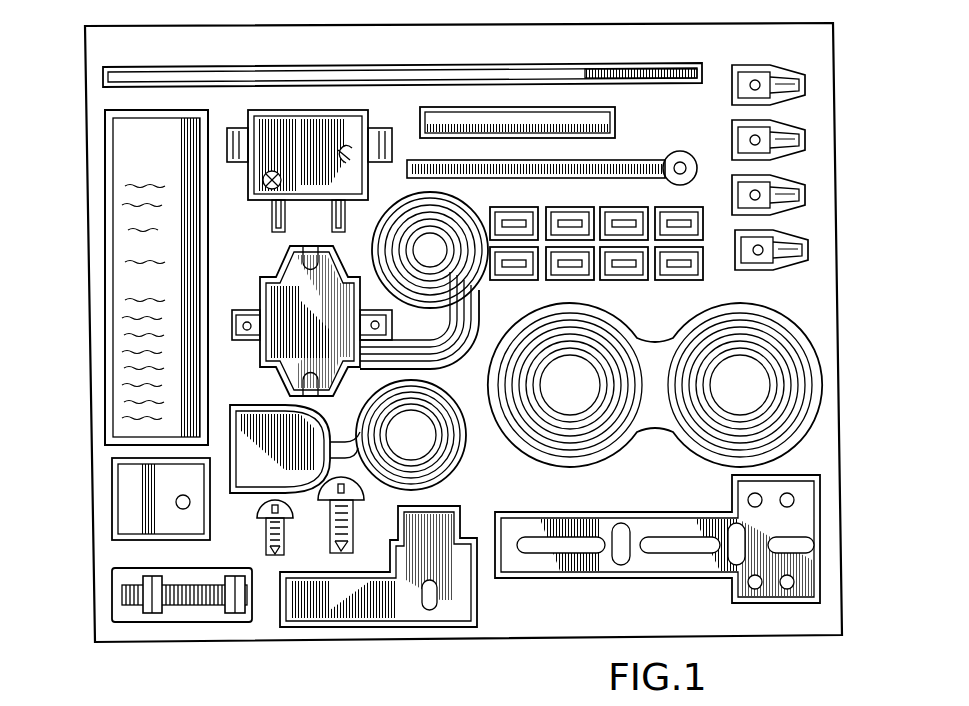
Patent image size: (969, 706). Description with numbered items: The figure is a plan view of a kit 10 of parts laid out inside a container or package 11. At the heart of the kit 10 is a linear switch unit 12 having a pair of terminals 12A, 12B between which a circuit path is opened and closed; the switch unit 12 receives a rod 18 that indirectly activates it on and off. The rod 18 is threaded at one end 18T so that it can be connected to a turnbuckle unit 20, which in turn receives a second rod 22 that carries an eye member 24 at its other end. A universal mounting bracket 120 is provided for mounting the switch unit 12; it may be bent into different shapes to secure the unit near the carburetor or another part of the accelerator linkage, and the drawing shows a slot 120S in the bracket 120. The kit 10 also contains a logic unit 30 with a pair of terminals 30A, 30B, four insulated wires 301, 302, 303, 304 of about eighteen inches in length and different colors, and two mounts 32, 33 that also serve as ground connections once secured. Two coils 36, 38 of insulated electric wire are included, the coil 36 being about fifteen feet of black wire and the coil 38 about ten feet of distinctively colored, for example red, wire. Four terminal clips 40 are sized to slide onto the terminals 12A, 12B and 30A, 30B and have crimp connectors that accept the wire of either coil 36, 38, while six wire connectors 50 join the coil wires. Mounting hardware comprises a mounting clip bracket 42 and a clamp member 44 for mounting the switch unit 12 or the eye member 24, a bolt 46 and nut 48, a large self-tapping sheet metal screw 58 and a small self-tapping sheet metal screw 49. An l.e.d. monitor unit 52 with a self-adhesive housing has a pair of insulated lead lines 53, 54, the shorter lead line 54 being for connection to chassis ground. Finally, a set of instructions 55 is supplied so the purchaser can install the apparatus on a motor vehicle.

The kit 10 is at (484, 361).
The container or package 11 is at (828, 452).
The linear switch unit 12 is at (304, 166).
The terminal 12A is at (321, 218).
The terminal 12B is at (268, 222).
The rod 18 is at (402, 60).
The threaded end 18T is at (627, 73).
The turnbuckle unit 20 is at (595, 118).
The rod 22 is at (552, 150).
The eye member 24 is at (661, 160).
The logic unit 30 is at (321, 319).
The terminal 30A is at (244, 337).
The terminal 30B is at (393, 325).
The mount 32 is at (282, 386).
The mount 33 is at (295, 262).
The coil of insulated electric wire 36 is at (657, 385).
The coil of insulated electric wire 38 is at (780, 347).
The terminal clip 40 is at (773, 80).
The mounting clip bracket 42 is at (195, 525).
The clamp member 44 is at (478, 600).
The bolt 46 is at (182, 623).
The nut 48 is at (152, 613).
The small self-tapping sheet metal screw 49 is at (285, 538).
The wire connector 50 is at (508, 212).
The l.e.d. monitor unit 52 is at (344, 452).
The insulated lead line 53 is at (336, 440).
The insulated lead line 54 is at (341, 458).
The set of instructions 55 is at (105, 238).
The large self-tapping sheet metal screw 58 is at (355, 538).
The universal mounting bracket 120 is at (698, 537).
The slot 120S is at (810, 544).
The insulated wire 301 is at (439, 290).
The insulated wire 302 is at (439, 281).
The insulated wire 303 is at (439, 280).
The insulated wire 304 is at (479, 303).